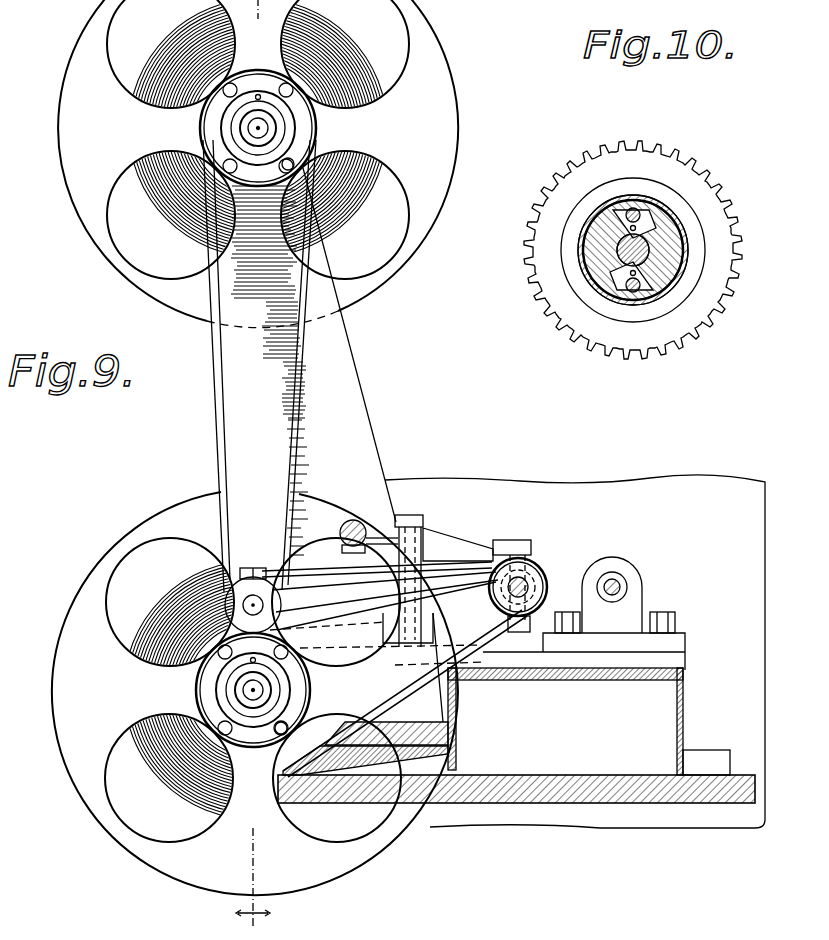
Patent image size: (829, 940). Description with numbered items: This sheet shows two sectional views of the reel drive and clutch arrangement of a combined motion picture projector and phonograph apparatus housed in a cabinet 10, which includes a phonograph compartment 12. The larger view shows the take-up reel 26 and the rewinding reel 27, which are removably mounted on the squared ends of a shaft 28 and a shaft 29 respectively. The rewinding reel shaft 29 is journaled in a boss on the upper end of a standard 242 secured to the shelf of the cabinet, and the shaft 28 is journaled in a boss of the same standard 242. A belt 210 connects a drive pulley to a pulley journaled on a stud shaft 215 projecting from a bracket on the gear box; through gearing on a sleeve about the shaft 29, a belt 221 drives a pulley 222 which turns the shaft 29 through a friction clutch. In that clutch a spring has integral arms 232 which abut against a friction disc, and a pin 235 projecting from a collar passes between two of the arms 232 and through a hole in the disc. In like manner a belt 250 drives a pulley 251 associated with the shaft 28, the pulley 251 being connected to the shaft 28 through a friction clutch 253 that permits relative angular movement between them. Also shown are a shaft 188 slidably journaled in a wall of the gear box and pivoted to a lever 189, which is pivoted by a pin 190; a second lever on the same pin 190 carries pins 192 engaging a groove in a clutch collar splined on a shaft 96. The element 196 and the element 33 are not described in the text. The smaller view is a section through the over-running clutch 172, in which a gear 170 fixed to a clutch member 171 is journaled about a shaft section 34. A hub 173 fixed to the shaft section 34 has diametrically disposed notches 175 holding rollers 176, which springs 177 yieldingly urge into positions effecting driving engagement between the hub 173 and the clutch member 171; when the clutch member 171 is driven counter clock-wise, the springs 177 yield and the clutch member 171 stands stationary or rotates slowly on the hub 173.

In FIG. 9, the rewinding reel 27 is at (441, 128).
In FIG. 9, the shaft 29 is at (254, 128).
In FIG. 9, the pin 235 is at (258, 95).
In FIG. 9, the arms 232 is at (296, 160).
In FIG. 9, the pulley 222 is at (258, 190).
In FIG. 9, the belt 221 is at (291, 396).
In FIG. 9, the standard 242 is at (376, 418).
In FIG. 9, the take-up reel 26 is at (321, 873).
In FIG. 9, the shaft 28 is at (249, 690).
In FIG. 9, the pulley 251 is at (300, 690).
In FIG. 9, the friction clutch 253 is at (292, 703).
In FIG. 9, the phonograph compartment 12 is at (253, 884).
In FIG. 9, the stud shaft 215 is at (245, 600).
In FIG. 9, the belt 210 is at (305, 570).
In FIG. 9, the lever 189 is at (382, 556).
In FIG. 9, the belt 250 is at (372, 690).
In FIG. 9, the pin 190 is at (421, 516).
In FIG. 9, the shaft 188 is at (353, 520).
In FIG. 9, the wedge 196 is at (470, 545).
In FIG. 9, the pins 192 is at (515, 540).
In FIG. 9, the shaft 96 is at (524, 582).
In FIG. 9, the bearing bracket 33 is at (618, 582).
In FIG. 9, the housing or cabinet 10 is at (717, 806).
In FIG. 10, the over-running clutch 172 is at (583, 190).
In FIG. 10, the notches 175 is at (683, 232).
In FIG. 10, the gear 170 is at (668, 170).
In FIG. 10, the clutch member 171 is at (668, 196).
In FIG. 10, the shaft section 34 is at (640, 250).
In FIG. 10, the hub 173 is at (672, 262).
In FIG. 10, the rollers 176 is at (635, 207).
In FIG. 10, the springs 177 is at (667, 206).